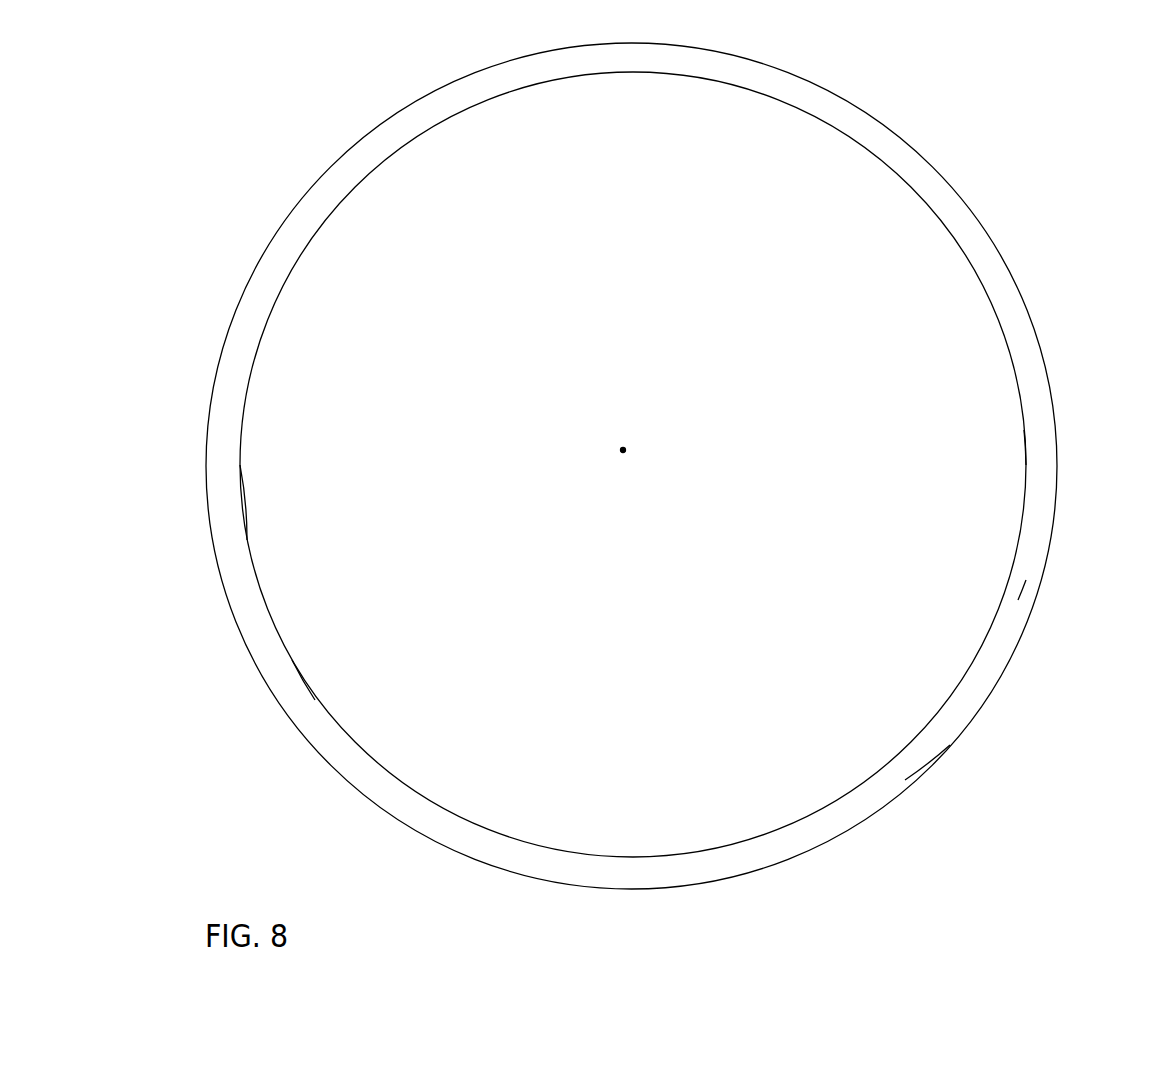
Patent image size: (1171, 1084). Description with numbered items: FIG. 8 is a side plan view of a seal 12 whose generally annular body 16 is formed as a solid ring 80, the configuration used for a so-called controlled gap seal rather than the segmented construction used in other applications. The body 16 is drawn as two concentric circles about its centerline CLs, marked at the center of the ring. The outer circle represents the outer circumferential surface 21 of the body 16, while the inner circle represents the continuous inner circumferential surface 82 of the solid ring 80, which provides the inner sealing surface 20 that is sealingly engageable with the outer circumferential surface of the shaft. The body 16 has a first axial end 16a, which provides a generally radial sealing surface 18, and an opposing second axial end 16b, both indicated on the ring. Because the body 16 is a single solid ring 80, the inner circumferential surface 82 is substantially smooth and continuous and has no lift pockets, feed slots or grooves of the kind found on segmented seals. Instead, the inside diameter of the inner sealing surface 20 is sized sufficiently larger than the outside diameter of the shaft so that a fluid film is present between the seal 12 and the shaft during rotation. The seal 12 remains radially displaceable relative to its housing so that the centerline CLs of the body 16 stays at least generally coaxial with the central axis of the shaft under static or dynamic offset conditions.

The seal 12 is at (1075, 211).
The annular body 16 is at (1045, 342).
The radial sealing surface 18 is at (231, 452).
The inner sealing surface 20 is at (256, 549).
The solid ring 80 is at (1047, 436).
The continuous inner circumferential surface 82 is at (303, 678).
The first axial end 16a is at (1028, 576).
The second axial end 16b is at (1037, 549).
The outer circumferential surface 21 is at (928, 768).
The centerline CLs is at (623, 450).